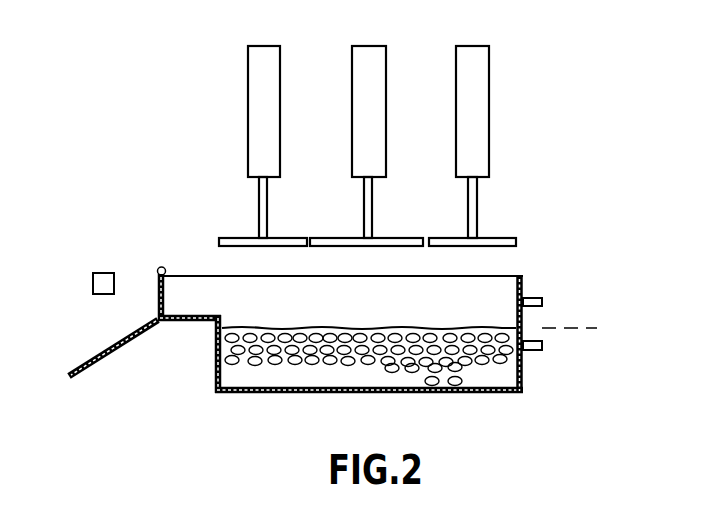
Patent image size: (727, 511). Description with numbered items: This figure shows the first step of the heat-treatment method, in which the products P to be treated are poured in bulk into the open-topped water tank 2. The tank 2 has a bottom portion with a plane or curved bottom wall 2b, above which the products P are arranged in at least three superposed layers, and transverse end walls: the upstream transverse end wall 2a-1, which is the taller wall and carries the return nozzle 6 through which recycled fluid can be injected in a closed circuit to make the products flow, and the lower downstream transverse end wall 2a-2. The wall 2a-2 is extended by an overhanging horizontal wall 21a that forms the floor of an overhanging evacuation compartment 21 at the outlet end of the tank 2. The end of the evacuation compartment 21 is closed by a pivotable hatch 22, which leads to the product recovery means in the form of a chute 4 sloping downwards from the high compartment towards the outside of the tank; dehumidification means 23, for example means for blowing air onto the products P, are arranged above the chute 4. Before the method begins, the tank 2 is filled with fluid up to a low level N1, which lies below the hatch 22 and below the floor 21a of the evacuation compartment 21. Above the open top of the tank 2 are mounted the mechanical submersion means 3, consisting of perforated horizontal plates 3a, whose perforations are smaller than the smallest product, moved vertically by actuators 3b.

The water tank 2 is at (528, 273).
The upstream transverse end wall 2a-1 is at (523, 377).
The downstream transverse end wall 2a-2 is at (215, 367).
The bottom wall 2b is at (400, 393).
The mechanical submersion means 3 is at (318, 132).
The perforated horizontal plates 3a is at (293, 237).
The actuators 3b is at (278, 145).
The chute 4 is at (75, 368).
The return nozzle 6 is at (537, 298).
The evacuation compartment 21 is at (180, 298).
The overhanging horizontal wall 21a is at (182, 321).
The pivotable hatch 22 is at (157, 287).
The dehumidification means 23 is at (100, 273).
The products P is at (372, 328).
The low level N1 is at (567, 327).